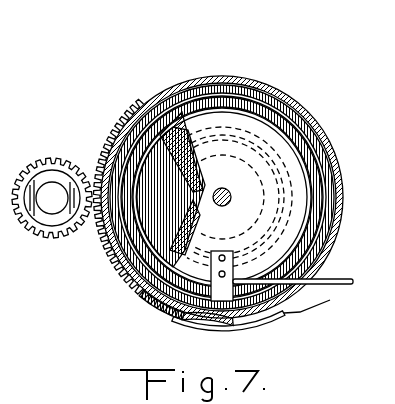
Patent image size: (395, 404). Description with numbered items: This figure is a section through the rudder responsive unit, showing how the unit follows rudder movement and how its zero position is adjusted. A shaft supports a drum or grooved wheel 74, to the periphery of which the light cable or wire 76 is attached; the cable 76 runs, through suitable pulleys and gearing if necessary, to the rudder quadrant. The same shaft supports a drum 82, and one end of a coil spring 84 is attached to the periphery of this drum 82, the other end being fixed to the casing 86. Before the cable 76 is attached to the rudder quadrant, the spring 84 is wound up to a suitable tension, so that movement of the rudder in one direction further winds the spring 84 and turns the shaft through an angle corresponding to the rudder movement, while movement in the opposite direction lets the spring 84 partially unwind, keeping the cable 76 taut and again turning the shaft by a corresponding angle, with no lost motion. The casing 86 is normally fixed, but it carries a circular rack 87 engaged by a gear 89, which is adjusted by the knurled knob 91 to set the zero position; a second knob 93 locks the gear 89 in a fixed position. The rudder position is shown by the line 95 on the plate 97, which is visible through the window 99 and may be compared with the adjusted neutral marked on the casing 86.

The drum or grooved wheel 74 is at (280, 167).
The light cable or wire 76 is at (330, 284).
The drum 82 is at (256, 184).
The coil spring 84 is at (290, 98).
The casing 86 is at (213, 75).
The circular rack 87 is at (106, 250).
The gear 89 is at (42, 238).
The knurled knob 91 is at (52, 158).
The knob 93 is at (60, 188).
The line 95 is at (245, 324).
The plate 97 is at (197, 318).
The window 99 is at (165, 320).